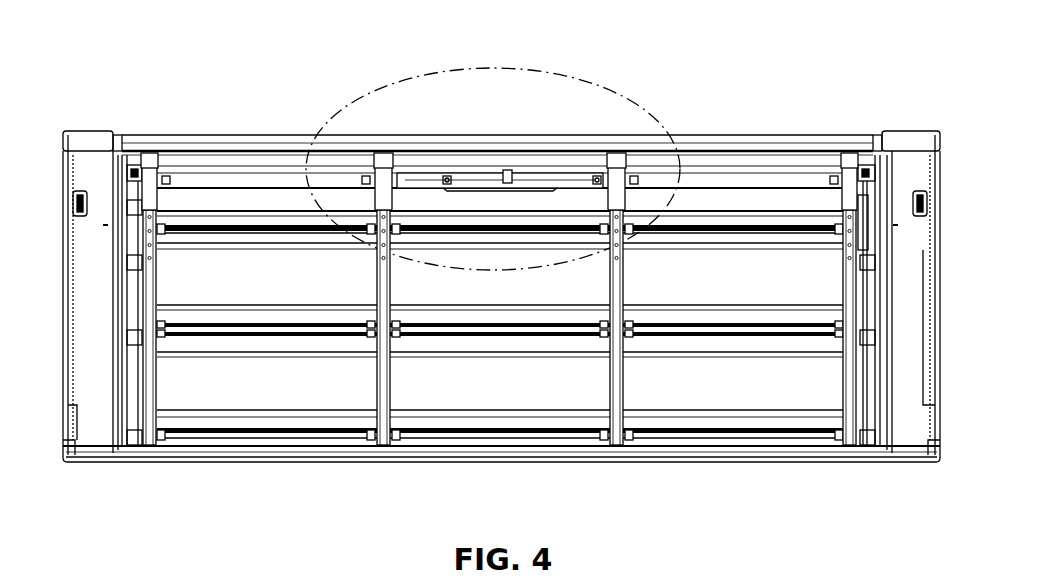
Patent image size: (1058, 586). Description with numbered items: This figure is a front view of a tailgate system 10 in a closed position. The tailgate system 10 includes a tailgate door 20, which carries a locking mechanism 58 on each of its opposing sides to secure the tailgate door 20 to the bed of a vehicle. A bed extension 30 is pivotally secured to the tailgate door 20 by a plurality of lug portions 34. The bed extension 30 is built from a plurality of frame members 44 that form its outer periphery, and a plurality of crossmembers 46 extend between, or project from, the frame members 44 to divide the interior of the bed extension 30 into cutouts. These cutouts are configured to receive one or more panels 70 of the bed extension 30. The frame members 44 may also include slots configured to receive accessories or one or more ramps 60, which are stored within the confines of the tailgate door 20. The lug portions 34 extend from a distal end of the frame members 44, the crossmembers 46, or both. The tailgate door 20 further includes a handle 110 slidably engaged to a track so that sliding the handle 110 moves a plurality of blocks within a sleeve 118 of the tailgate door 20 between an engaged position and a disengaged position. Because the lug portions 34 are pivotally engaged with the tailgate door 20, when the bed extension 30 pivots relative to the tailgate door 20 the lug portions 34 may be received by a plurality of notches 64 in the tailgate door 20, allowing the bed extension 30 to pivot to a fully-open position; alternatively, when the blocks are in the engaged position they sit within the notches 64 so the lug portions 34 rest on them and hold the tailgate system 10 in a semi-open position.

The tailgate system 10 is at (212, 64).
The tailgate door 20 is at (102, 438).
The bed extension 30 is at (733, 470).
The lug portions 34 is at (153, 196).
The frame members 44 is at (150, 362).
The crossmembers 46 is at (382, 425).
The locking mechanism 58 is at (74, 206).
The ramps 60 is at (136, 205).
The notches 64 is at (150, 160).
The panels 70 is at (497, 337).
The handle 110 is at (508, 169).
The sleeve 118 is at (428, 166).